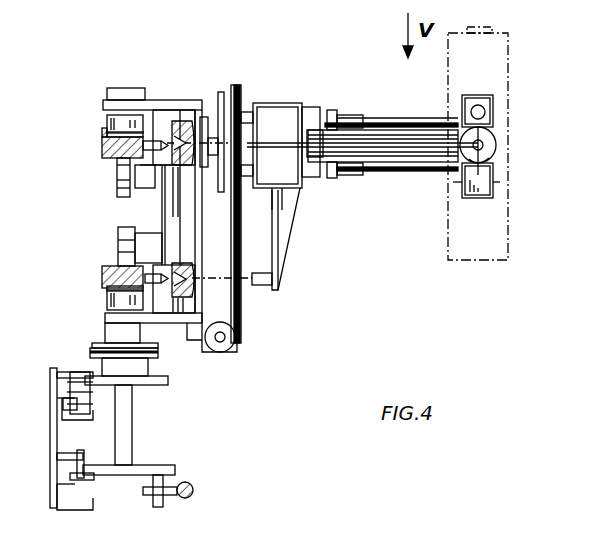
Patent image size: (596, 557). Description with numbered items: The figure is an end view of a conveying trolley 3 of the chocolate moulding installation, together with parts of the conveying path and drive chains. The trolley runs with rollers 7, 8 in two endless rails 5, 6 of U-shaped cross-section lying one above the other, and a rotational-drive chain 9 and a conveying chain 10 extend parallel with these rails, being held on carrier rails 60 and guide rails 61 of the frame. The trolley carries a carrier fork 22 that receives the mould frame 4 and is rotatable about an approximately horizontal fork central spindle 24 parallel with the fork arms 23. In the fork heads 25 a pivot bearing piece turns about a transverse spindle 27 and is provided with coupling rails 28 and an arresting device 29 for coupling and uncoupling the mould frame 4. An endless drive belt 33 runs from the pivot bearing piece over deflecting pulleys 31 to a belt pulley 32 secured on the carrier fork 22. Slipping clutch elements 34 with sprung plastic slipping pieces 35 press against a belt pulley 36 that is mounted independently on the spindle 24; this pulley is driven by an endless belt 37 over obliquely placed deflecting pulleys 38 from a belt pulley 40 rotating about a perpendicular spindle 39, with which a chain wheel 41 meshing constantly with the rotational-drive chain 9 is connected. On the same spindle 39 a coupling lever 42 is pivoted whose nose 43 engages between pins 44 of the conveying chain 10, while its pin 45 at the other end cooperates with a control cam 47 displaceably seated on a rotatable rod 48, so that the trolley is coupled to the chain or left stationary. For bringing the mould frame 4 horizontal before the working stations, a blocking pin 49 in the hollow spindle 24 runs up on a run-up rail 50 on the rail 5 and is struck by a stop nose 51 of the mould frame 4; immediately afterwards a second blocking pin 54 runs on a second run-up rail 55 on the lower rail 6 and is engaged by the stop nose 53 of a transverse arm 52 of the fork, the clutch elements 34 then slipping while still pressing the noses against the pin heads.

The conveying trolley 3 is at (298, 231).
The mould frame 4 is at (510, 57).
The rail 5 is at (102, 145).
The rail 6 is at (103, 270).
The roller 7 is at (112, 124).
The roller 8 is at (122, 189).
The rotational-drive chain 9 is at (70, 401).
The conveying chain 10 is at (58, 487).
The carrier fork 22 is at (311, 112).
The fork arms 23 is at (392, 133).
The fork central spindle 24 is at (221, 102).
The fork head 25 is at (490, 160).
The transverse spindle 27 is at (497, 143).
The coupling rail 28 is at (490, 190).
The arresting device 29 is at (486, 112).
The deflecting pulley 31 is at (342, 176).
The belt pulley 32 is at (333, 177).
The endless drive belt 33 is at (416, 171).
The slipping clutch element 34 is at (281, 112).
The slipping piece 35 is at (247, 114).
The belt pulley 36 is at (232, 85).
The endless belt 37 is at (236, 305).
The deflecting pulley 38 is at (235, 346).
The spindle 39 is at (158, 360).
The belt pulley 40 is at (105, 335).
The chain wheel 41 is at (146, 385).
The coupling lever 42 is at (109, 470).
The nose 43 is at (362, 73).
The pin 44 is at (78, 462).
The pin 45 is at (172, 471).
The control cam 47 is at (168, 497).
The rod 48 is at (193, 491).
The blocking pin 49 is at (183, 123).
The run-up rail 50 is at (153, 150).
The stop nose 51 is at (488, 27).
The transverse arm 52 is at (283, 265).
The stop nose 53 is at (264, 286).
The second blocking pin 54 is at (244, 279).
The second run-up rail 55 is at (123, 252).
The carrier rail 60 is at (78, 419).
The guide rail 61 is at (62, 374).